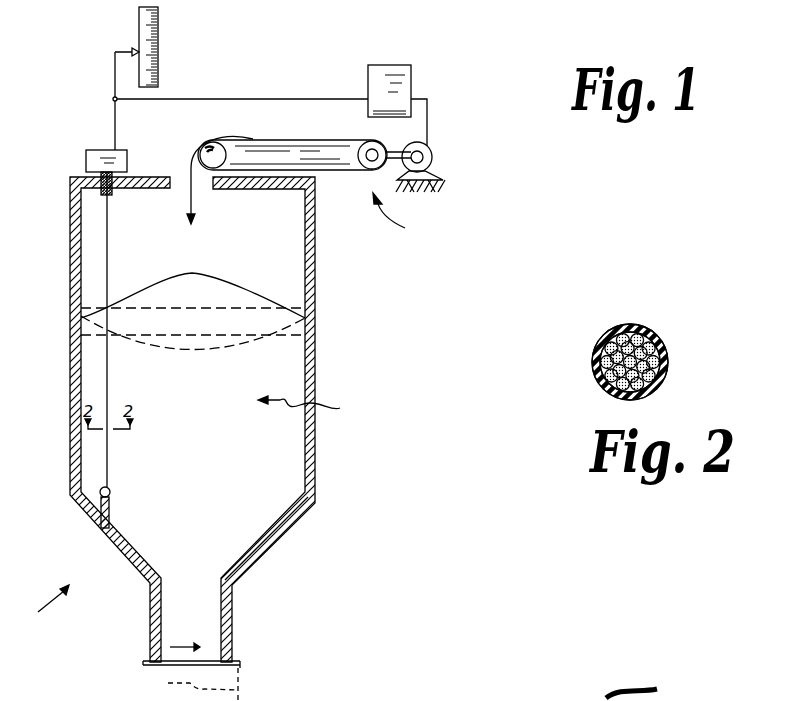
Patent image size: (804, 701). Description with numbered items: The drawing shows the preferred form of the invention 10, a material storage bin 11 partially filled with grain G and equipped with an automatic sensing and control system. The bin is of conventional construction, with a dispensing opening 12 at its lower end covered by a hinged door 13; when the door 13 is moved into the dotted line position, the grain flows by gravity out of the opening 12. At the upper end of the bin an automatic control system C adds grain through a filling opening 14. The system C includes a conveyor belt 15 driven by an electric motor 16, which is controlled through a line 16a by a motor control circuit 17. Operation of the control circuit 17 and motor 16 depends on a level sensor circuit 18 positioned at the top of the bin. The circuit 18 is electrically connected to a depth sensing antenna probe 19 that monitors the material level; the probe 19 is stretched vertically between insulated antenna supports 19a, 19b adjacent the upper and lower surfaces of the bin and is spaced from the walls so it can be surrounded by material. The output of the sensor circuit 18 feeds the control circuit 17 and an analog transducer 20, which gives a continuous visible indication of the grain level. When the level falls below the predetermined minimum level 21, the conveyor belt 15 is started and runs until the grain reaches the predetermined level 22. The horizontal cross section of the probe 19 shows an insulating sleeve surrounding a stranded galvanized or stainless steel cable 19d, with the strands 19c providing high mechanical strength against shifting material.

In FIG. 1, the preferred form of the invention 10 is at (39, 606).
In FIG. 1, the material storage bin 11 is at (70, 413).
In FIG. 1, the dispensing opening 12 is at (150, 650).
In FIG. 1, the hinged door 13 is at (183, 665).
In FIG. 1, the filling opening 14 is at (172, 180).
In FIG. 1, the conveyor belt 15 is at (270, 139).
In FIG. 1, the electric motor 16 is at (433, 156).
In FIG. 1, the line 16a is at (427, 123).
In FIG. 1, the motor control circuit 17 is at (415, 79).
In FIG. 1, the level sensor circuit 18 is at (86, 153).
In FIG. 1, the depth sensing antenna probe 19 is at (107, 379).
In FIG. 2, the depth sensing antenna probe 19 is at (588, 370).
In FIG. 1, the insulated antenna support 19a is at (112, 176).
In FIG. 1, the insulated antenna support 19b is at (110, 491).
In FIG. 2, the cable strand 19c is at (665, 338).
In FIG. 2, the stranded cable 19d is at (665, 356).
In FIG. 1, the analog transducer 20 is at (139, 20).
In FIG. 1, the predetermined minimum level 21 is at (88, 325).
In FIG. 1, the predetermined level 22 is at (100, 308).
In FIG. 1, the automatic control system C is at (398, 218).
In FIG. 1, the grain G is at (309, 409).